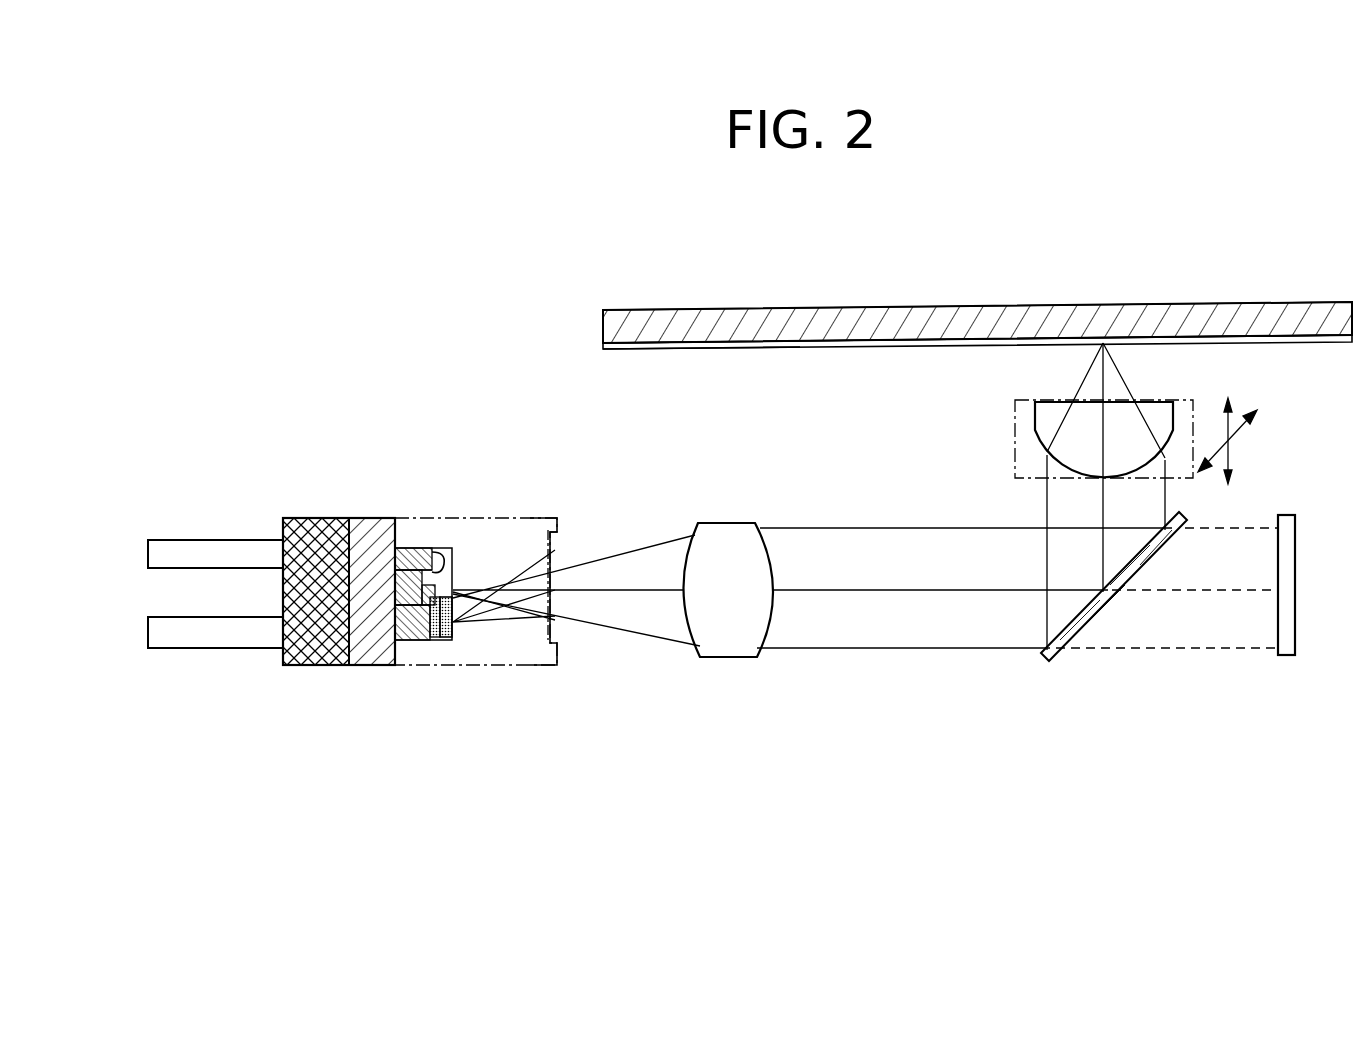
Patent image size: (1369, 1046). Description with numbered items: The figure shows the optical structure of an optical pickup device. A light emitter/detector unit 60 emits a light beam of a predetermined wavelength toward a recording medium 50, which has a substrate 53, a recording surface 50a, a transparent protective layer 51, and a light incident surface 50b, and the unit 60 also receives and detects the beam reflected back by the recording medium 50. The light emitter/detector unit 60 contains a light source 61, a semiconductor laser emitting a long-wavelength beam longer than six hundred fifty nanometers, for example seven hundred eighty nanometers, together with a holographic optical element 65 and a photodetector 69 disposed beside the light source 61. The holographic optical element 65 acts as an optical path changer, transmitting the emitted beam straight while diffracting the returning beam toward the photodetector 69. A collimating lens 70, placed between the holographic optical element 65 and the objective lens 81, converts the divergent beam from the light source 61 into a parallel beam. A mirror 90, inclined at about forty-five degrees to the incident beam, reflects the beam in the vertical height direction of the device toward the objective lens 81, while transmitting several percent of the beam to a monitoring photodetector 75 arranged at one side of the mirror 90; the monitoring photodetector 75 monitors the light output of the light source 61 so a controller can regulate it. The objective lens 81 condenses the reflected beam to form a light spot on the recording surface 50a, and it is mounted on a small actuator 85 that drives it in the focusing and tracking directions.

The recording medium 50 is at (936, 311).
The recording surface 50a is at (645, 349).
The light incident surface 50b is at (698, 349).
The transparent protective layer 51 is at (603, 347).
The substrate 53 is at (603, 326).
The light emitter/detector unit 60 is at (319, 576).
The light source 61 is at (437, 640).
The photodetector 69 is at (446, 640).
The holographic optical element 65 is at (553, 548).
The collimating lens 70 is at (733, 520).
The mirror 90 is at (1105, 607).
The actuator 85 is at (1094, 449).
The objective lens 81 is at (1042, 460).
The monitoring photodetector 75 is at (1295, 590).